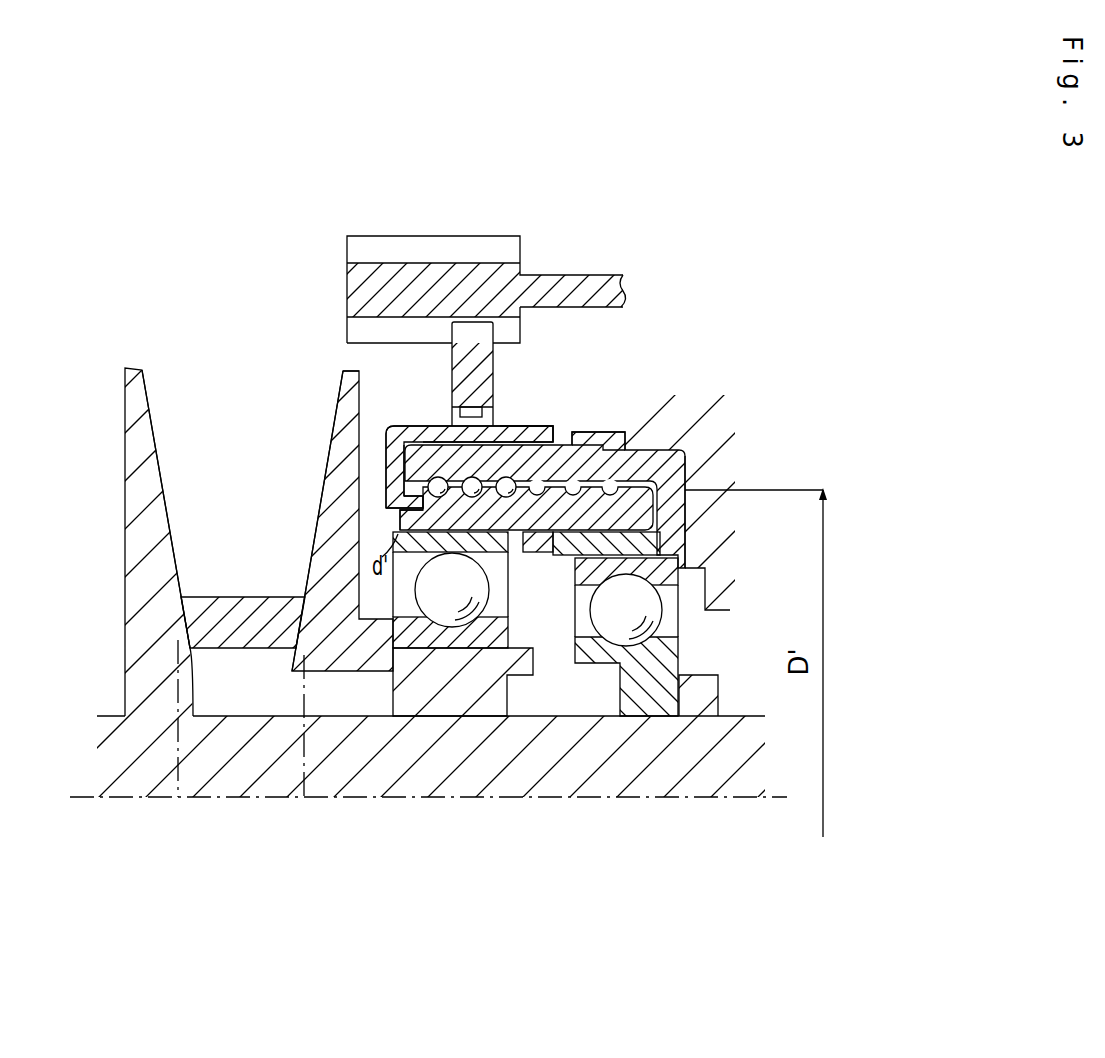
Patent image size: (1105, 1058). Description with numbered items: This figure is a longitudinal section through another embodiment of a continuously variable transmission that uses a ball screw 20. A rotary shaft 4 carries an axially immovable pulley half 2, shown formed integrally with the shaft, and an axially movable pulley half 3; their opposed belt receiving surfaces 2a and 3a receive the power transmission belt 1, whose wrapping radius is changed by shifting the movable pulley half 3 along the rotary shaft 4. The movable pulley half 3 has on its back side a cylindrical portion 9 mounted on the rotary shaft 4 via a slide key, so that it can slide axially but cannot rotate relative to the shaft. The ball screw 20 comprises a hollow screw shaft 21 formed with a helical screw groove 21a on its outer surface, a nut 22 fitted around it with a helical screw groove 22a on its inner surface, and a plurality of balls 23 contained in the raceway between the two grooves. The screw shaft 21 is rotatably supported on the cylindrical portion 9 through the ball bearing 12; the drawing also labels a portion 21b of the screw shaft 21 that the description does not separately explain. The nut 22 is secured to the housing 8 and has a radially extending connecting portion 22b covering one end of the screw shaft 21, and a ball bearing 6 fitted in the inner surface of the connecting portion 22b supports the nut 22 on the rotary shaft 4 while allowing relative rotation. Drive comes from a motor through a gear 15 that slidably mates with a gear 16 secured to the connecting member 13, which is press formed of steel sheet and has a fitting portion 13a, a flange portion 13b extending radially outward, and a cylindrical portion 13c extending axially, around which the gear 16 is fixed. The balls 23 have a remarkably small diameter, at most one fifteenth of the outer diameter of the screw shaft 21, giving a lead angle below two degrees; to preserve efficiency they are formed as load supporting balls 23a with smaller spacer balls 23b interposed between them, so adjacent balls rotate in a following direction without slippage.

The power transmission belt 1 is at (232, 597).
The axially immovable pulley half 2 is at (125, 482).
The belt receiving surface 2a is at (162, 465).
The axially movable pulley half 3 is at (336, 408).
The belt receiving surface 3a is at (332, 420).
The rotary shaft 4 is at (638, 772).
The ball bearing 6 is at (688, 658).
The housing 8 is at (717, 444).
The cylindrical portion 9 is at (465, 700).
The ball bearing 12 is at (514, 624).
The connecting member 13 is at (344, 372).
The fitting portion 13a is at (395, 506).
The flange portion 13b is at (385, 470).
The cylindrical portion 13c is at (512, 478).
The gear 15 is at (347, 262).
The gear 16 is at (494, 357).
The ball screw 20 is at (592, 438).
The screw shaft 21 is at (541, 534).
The helical screw groove 21a is at (478, 492).
The end portion 21b is at (398, 520).
The nut 22 is at (638, 448).
The helical screw groove 22a is at (572, 436).
The connecting portion 22b is at (690, 522).
The balls 23 is at (435, 381).
The load supporting balls 23a is at (442, 440).
The spacer balls 23b is at (400, 427).